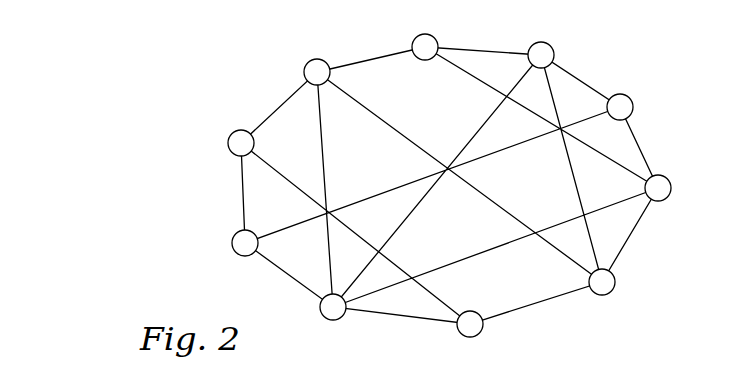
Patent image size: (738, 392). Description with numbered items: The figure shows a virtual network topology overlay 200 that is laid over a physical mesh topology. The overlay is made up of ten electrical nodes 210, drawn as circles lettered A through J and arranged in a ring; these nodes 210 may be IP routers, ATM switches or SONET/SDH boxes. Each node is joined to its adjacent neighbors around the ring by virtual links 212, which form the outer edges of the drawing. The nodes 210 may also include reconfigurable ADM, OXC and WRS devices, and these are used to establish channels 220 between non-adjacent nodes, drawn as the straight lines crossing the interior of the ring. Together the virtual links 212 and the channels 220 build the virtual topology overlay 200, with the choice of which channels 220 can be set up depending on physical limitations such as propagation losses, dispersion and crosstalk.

The virtual network topology overlay 200 is at (178, 198).
The electrical nodes 210 is at (318, 59).
The virtual links 212 is at (631, 236).
The channels 220 is at (468, 257).